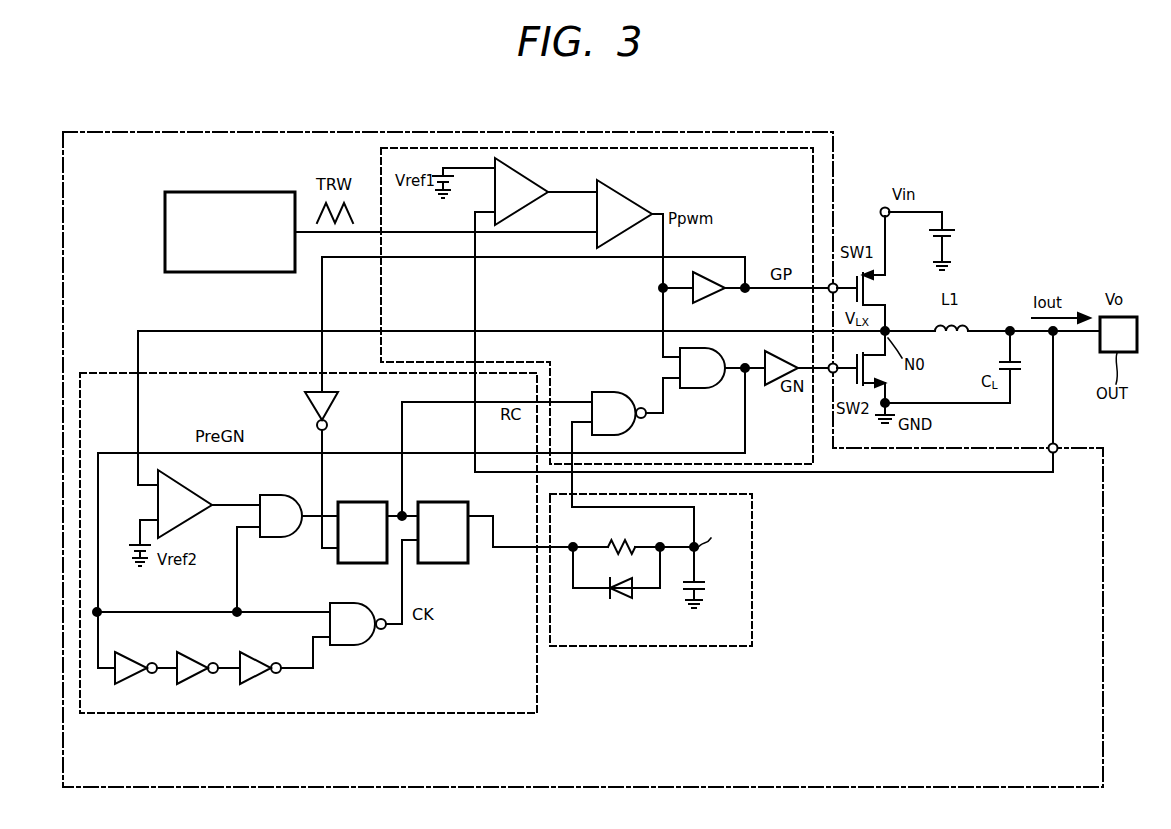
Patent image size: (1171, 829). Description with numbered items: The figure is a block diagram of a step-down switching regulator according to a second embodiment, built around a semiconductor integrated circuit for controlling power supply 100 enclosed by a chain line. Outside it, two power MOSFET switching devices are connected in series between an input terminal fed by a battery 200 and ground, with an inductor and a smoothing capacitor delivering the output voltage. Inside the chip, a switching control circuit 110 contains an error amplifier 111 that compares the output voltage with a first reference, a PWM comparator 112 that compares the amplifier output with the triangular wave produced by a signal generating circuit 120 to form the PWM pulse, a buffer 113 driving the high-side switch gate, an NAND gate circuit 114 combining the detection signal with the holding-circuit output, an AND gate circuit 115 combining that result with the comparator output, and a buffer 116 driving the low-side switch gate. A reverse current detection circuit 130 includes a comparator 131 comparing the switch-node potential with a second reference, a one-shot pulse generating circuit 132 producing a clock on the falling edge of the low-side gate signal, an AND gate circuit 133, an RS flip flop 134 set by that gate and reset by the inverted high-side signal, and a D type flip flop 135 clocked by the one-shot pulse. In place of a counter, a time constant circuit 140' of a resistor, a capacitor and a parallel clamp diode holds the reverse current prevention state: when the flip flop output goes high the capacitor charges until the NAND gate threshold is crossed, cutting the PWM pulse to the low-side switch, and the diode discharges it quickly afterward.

The semiconductor integrated circuit for controlling power supply 100 is at (775, 132).
The switching control circuit 110 is at (615, 147).
The error amplifier 111 is at (532, 181).
The PWM comparator 112 is at (622, 198).
The buffer 113 is at (712, 296).
The NAND gate circuit 114 is at (610, 390).
The AND gate circuit 115 is at (708, 390).
The buffer 116 is at (771, 388).
The signal generating circuit 120 is at (194, 273).
The reverse current detection circuit 130 is at (110, 372).
The comparator for reverse current detection 131 is at (200, 492).
The one-shot pulse generating circuit 132 is at (332, 661).
The AND gate circuit 133 is at (276, 540).
The RS flip flop 134 is at (336, 562).
The D type flip flop 135 is at (470, 508).
The time constant circuit 140' is at (679, 570).
The battery 200 is at (950, 230).